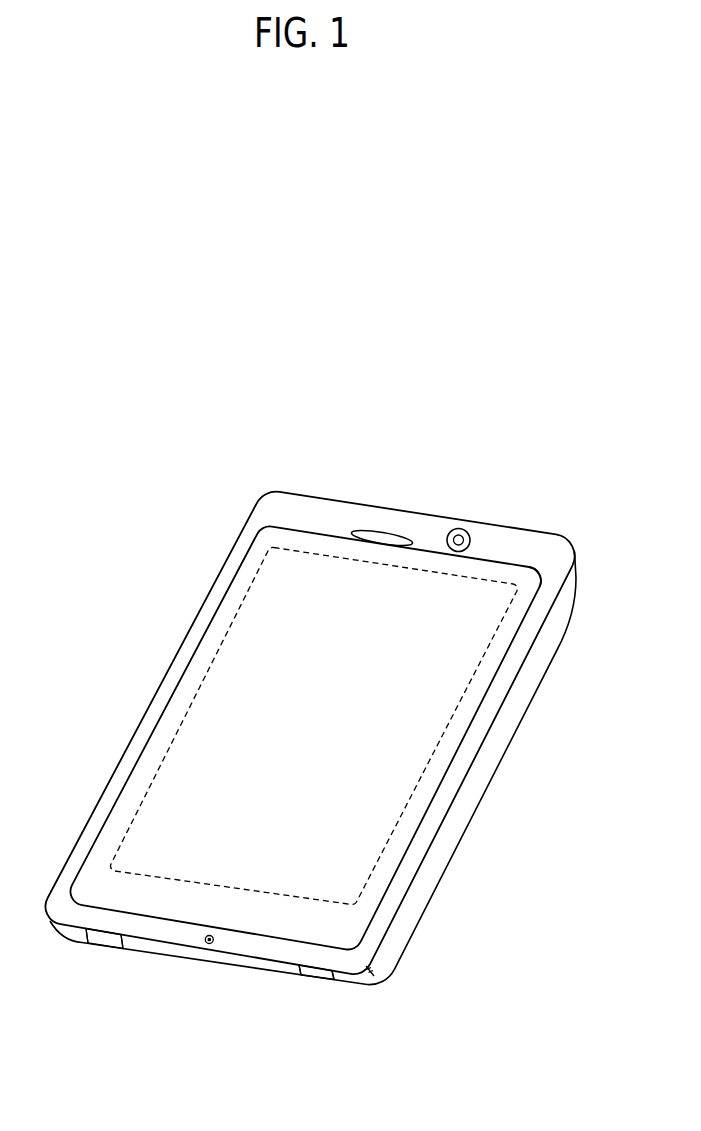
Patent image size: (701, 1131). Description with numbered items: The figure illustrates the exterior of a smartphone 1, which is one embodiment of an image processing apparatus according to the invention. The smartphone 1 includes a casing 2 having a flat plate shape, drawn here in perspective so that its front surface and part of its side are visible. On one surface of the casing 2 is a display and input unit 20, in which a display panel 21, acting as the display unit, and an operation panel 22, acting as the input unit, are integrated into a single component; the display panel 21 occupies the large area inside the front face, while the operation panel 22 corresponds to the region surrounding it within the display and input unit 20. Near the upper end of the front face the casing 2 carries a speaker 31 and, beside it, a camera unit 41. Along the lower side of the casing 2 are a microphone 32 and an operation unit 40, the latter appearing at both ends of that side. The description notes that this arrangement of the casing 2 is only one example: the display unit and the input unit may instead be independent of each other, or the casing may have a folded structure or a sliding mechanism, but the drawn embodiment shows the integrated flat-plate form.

The smartphone 1 is at (93, 491).
The casing 2 is at (265, 510).
The display and input unit 20 is at (595, 478).
The display panel 21 is at (470, 577).
The operation panel 22 is at (518, 564).
The speaker 31 is at (383, 533).
The microphone 32 is at (207, 944).
The operation unit 40 is at (107, 944).
The camera unit 41 is at (460, 528).